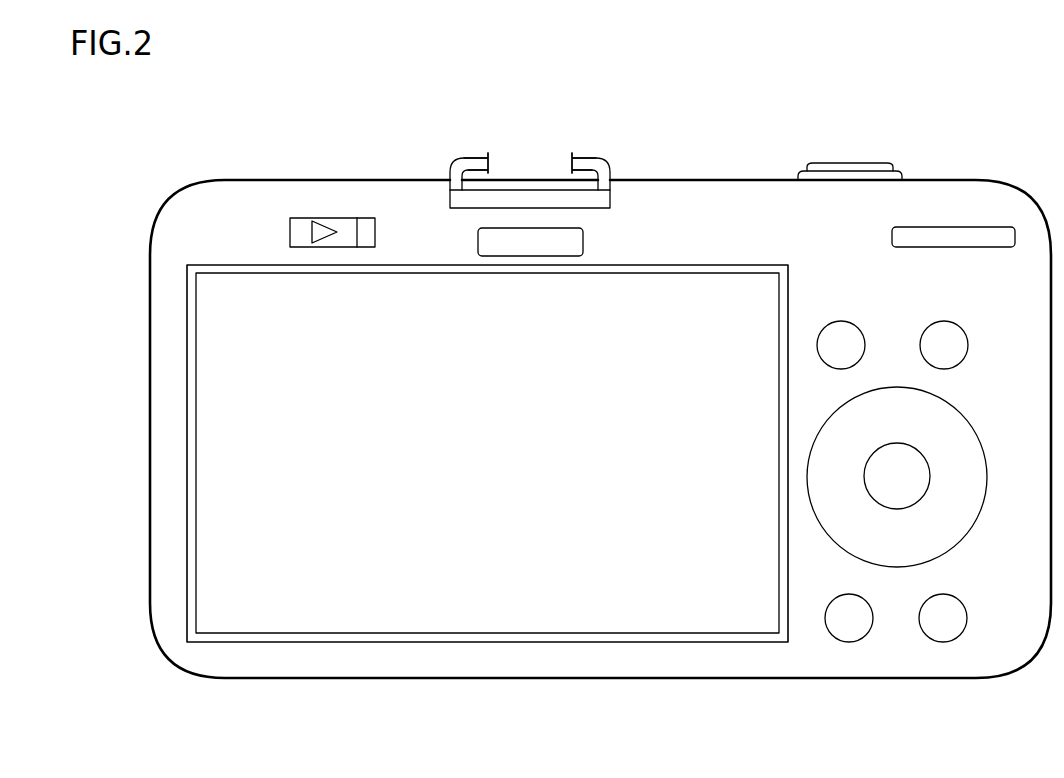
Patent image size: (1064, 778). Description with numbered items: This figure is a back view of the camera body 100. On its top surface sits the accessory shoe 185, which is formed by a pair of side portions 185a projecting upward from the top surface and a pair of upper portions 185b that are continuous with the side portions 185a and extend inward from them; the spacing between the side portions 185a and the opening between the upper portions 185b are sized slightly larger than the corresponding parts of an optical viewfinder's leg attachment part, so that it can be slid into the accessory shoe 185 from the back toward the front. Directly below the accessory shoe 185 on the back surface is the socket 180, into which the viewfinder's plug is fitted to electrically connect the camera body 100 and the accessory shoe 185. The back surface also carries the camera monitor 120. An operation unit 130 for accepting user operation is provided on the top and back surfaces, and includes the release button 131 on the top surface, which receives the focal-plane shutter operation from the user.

The camera body 100 is at (888, 108).
The camera monitor 120 is at (507, 590).
The operation unit 130 is at (898, 653).
The release button 131 is at (845, 163).
The socket 180 is at (575, 242).
The accessory shoe 185 is at (523, 153).
The side portions 185a is at (450, 176).
The upper portions 185b is at (538, 136).